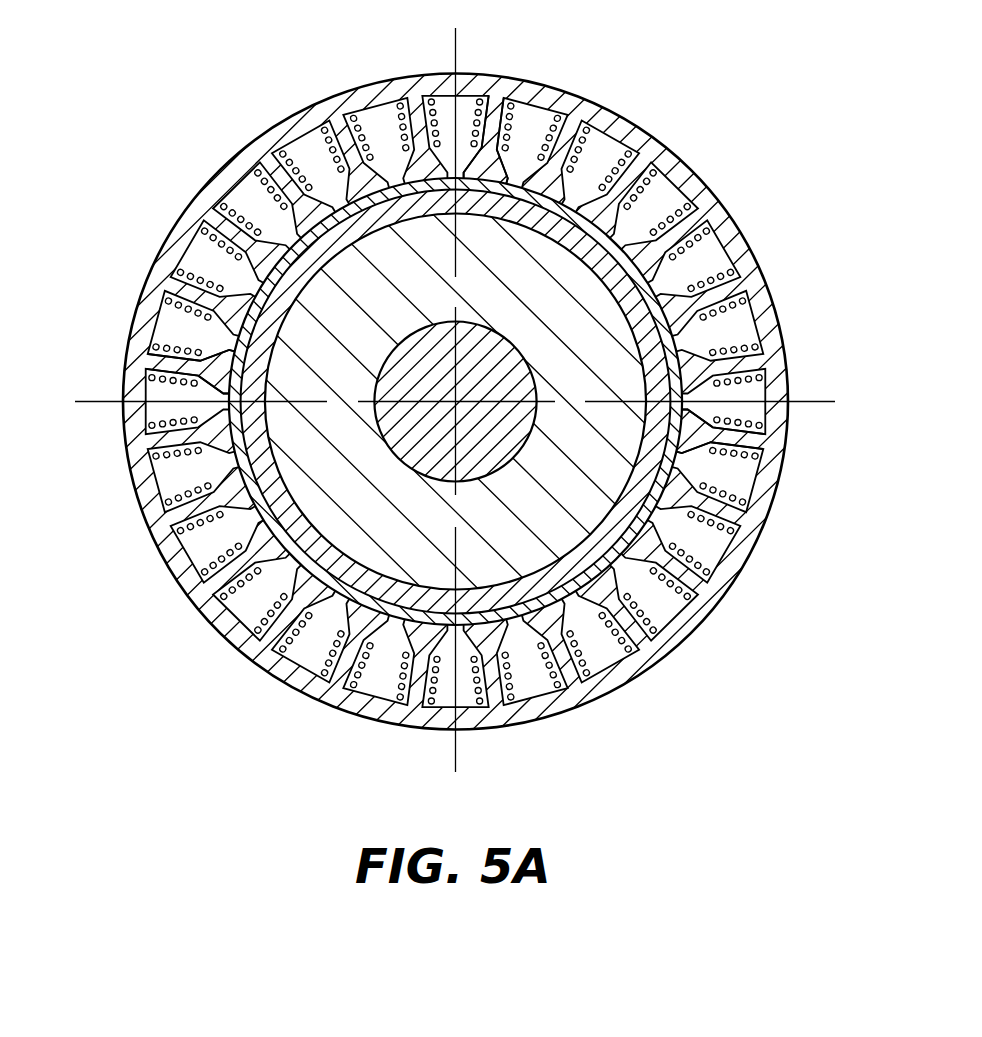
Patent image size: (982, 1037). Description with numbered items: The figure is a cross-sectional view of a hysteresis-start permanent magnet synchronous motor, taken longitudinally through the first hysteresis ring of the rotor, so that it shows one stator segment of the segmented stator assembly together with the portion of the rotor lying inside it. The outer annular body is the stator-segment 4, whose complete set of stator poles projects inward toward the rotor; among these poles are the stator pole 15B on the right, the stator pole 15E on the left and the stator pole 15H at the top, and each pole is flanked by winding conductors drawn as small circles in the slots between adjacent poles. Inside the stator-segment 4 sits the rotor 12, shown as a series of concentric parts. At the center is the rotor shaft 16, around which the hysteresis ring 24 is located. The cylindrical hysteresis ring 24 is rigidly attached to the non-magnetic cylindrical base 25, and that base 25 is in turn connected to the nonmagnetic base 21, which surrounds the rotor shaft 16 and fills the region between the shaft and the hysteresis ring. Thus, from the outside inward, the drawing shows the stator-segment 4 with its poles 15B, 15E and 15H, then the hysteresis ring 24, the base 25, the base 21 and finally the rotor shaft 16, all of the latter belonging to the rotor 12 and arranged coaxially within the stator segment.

The stator-segment 4 is at (719, 197).
The rotor 12 is at (782, 235).
The stator pole 15B is at (740, 440).
The stator pole 15E is at (153, 362).
The stator pole 15H is at (497, 107).
The rotor shaft 16 is at (491, 355).
The nonmagnetic base 21 is at (364, 492).
The hysteresis ring 24 is at (488, 615).
The non-magnetic cylindrical base 25 is at (338, 247).